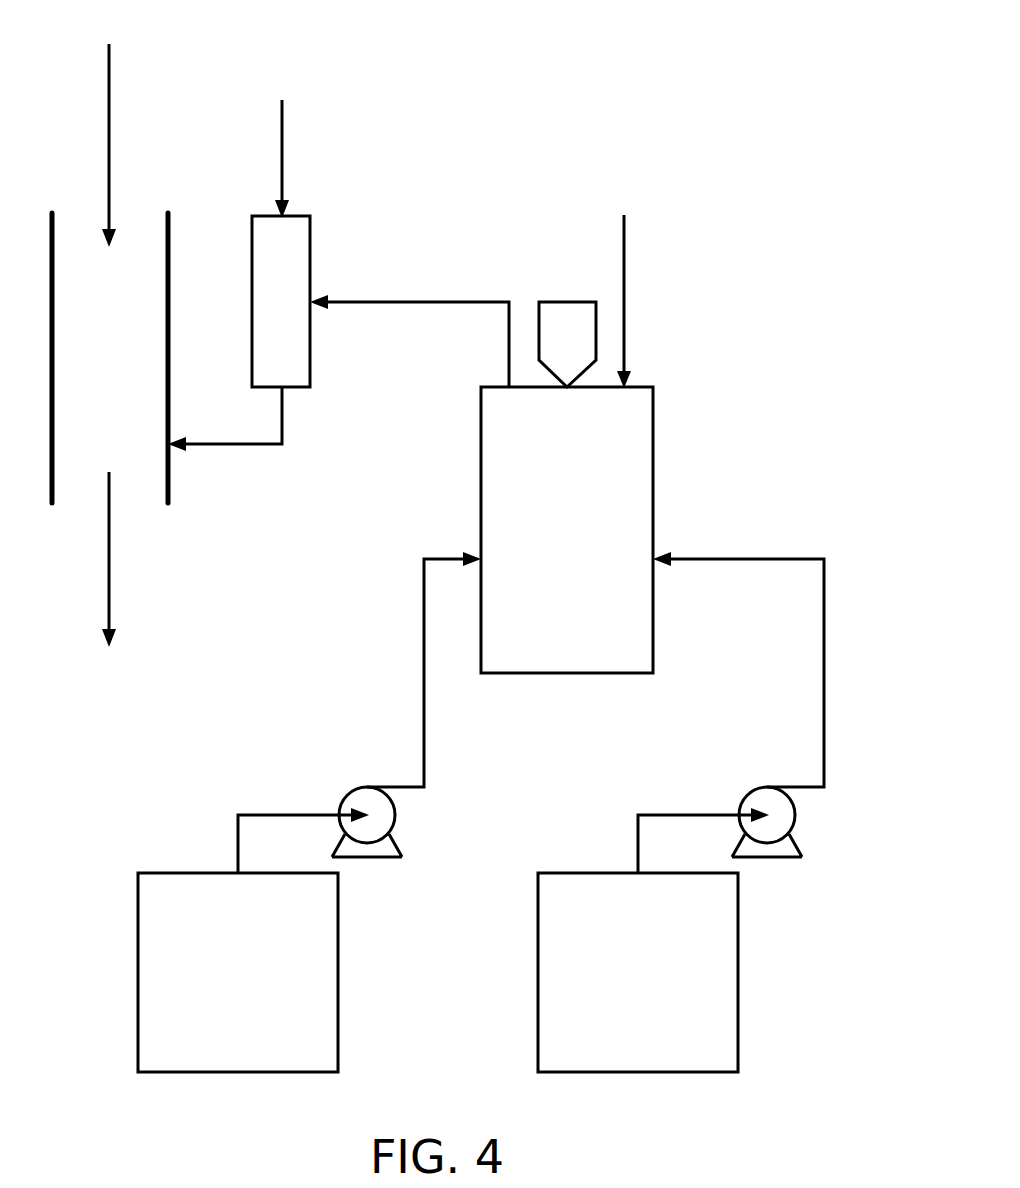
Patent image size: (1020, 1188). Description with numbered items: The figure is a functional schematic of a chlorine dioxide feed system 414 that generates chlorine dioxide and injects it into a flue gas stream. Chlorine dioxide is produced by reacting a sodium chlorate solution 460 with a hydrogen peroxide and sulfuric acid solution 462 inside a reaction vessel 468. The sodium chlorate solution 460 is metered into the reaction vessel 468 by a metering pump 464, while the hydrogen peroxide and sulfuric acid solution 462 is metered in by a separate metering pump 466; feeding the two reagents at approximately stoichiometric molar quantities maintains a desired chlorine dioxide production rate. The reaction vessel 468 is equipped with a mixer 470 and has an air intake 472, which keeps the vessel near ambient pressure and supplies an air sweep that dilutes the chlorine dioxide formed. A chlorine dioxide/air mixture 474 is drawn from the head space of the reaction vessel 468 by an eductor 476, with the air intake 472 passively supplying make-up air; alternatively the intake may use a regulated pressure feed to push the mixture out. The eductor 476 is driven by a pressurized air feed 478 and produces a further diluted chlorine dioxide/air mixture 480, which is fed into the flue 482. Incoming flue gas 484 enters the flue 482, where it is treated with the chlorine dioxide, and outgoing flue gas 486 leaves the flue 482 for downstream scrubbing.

The chlorine dioxide feed system 414 is at (598, 105).
The sodium chlorate solution 460 is at (238, 972).
The hydrogen peroxide and sulfuric acid solution 462 is at (638, 972).
The metering pump 464 is at (395, 815).
The metering pump 466 is at (795, 815).
The reaction vessel 468 is at (567, 530).
The mixer 470 is at (567, 300).
The air intake 472 is at (625, 240).
The chlorine dioxide/air mixture 474 is at (451, 304).
The eductor 476 is at (310, 240).
The pressurized air feed 478 is at (282, 135).
The further diluted chlorine dioxide/air mixture 480 is at (225, 445).
The flue 482 is at (143, 482).
The incoming flue gas 484 is at (109, 72).
The outgoing flue gas 486 is at (111, 558).